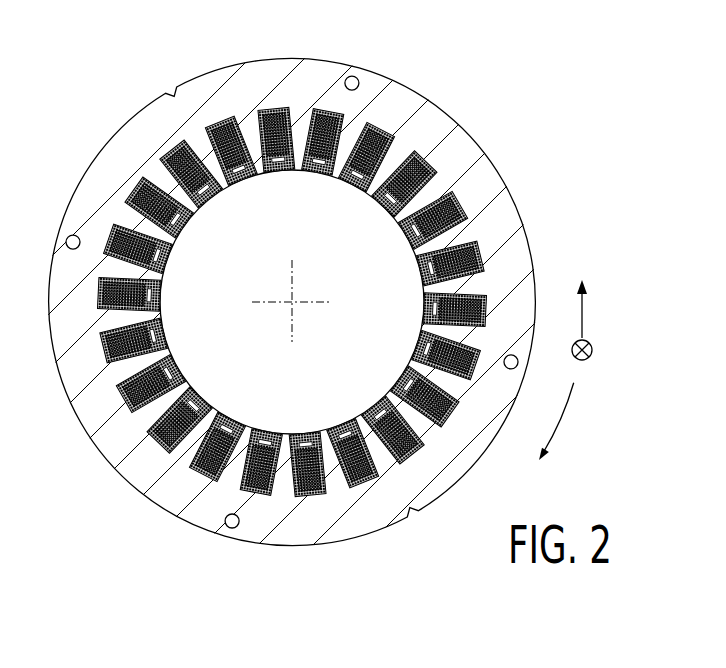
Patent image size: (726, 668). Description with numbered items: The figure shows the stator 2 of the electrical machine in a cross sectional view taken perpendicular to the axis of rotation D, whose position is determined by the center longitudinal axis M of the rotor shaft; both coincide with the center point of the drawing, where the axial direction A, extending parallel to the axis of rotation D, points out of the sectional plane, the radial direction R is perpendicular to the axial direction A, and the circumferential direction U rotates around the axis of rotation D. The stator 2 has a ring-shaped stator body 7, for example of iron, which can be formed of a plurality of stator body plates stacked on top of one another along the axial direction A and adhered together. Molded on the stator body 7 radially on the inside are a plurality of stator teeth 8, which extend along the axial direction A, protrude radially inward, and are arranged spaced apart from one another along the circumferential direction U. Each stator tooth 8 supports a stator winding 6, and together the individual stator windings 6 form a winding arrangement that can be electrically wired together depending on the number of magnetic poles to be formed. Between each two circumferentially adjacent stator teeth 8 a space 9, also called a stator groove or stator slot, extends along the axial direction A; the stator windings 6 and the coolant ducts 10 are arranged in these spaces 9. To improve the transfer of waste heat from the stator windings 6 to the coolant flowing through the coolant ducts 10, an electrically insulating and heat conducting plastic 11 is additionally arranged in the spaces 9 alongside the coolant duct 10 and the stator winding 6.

The stator 2 is at (570, 152).
The stator winding 6 is at (272, 255).
The stator body 7 is at (433, 118).
The stator tooth 8 is at (270, 158).
The space 9 is at (272, 263).
The coolant duct 10 is at (245, 168).
The electrically insulating and heat conducting plastic 11 is at (214, 121).
The center longitudinal axis M is at (317, 322).
The axis of rotation D is at (294, 304).
The radial direction R is at (583, 313).
The axial direction A is at (592, 352).
The circumferential direction U is at (563, 415).